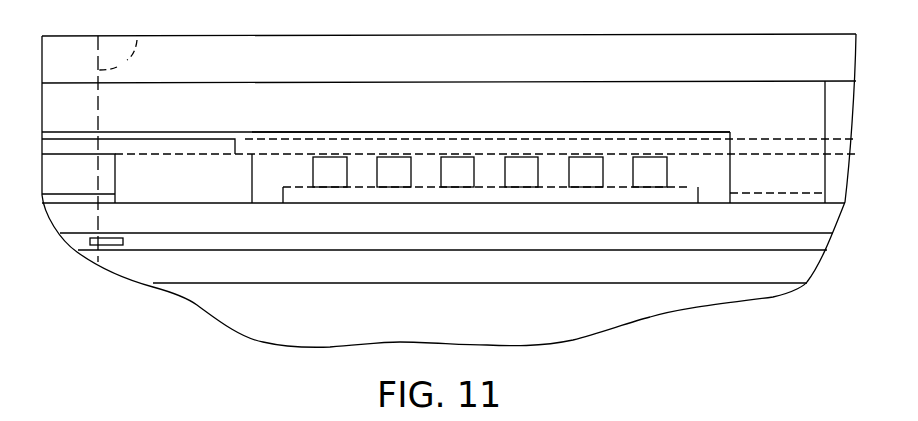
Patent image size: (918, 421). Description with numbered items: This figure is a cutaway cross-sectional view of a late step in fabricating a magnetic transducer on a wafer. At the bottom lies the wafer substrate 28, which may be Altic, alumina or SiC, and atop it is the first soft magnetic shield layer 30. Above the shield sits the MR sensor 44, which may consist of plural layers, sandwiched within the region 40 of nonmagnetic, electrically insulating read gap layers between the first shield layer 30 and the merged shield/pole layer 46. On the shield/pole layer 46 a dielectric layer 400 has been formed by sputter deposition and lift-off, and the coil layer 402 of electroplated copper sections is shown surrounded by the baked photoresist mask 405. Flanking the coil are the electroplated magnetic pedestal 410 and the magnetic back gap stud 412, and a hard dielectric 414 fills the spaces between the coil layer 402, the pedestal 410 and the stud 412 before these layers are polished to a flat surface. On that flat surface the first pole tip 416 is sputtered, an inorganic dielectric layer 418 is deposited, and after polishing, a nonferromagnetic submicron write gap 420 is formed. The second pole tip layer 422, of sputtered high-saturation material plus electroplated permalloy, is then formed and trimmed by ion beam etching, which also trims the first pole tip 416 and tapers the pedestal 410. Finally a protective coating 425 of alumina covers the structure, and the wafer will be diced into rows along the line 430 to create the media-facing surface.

The wafer substrate 28 is at (449, 190).
The first soft magnetic shield layer 30 is at (480, 270).
The region of nonmagnetic, electrically insulating layers 40 is at (617, 243).
The MR sensor 44 is at (115, 245).
The shield/pole layer 46 is at (443, 218).
The dielectric layer 400 is at (363, 178).
The coil layer 402 is at (682, 168).
The photoresist mask 405 is at (427, 163).
The magnetic pedestal 410 is at (147, 178).
The magnetic back gap stud 412 is at (777, 142).
The hard dielectric 414 is at (273, 163).
The first pole tip 416 is at (172, 147).
The inorganic dielectric layer 418 is at (503, 147).
The nonferromagnetic submicron write gap 420 is at (220, 132).
The second pole tip layer 422 is at (491, 114).
The protective coating 425 is at (449, 58).
The dicing line 430 is at (137, 28).